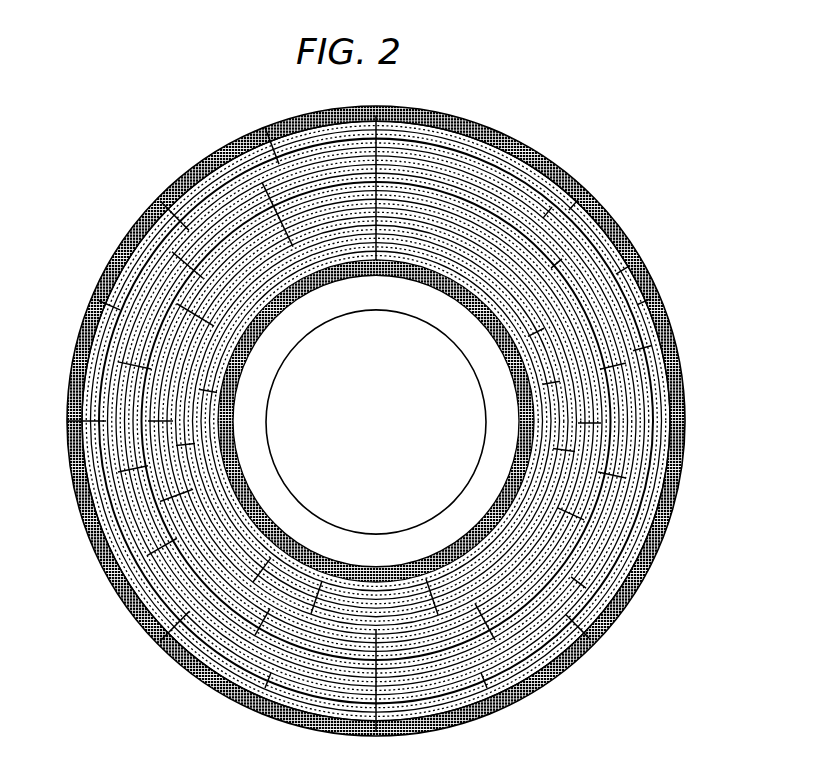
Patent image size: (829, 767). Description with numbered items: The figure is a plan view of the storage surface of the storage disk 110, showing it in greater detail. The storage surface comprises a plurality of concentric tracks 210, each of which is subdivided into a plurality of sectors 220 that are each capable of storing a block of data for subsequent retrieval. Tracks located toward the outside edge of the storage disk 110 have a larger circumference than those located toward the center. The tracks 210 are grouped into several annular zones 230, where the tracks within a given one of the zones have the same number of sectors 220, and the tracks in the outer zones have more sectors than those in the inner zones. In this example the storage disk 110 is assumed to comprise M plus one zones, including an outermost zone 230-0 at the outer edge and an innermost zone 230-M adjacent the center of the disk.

The storage disk 110 is at (120, 176).
The concentric tracks 210 is at (548, 635).
The sectors 220 is at (662, 290).
The annular zones 230 is at (594, 460).
The outermost zone 230-0 is at (258, 121).
The innermost zone 230-M is at (299, 278).